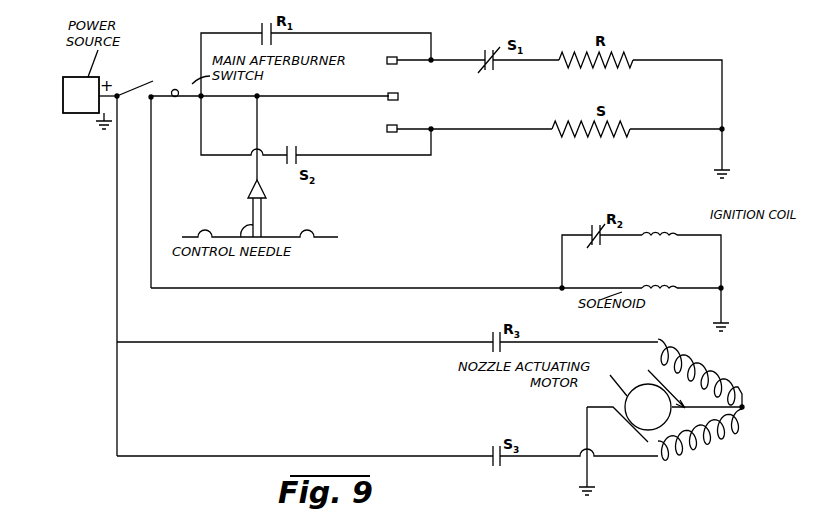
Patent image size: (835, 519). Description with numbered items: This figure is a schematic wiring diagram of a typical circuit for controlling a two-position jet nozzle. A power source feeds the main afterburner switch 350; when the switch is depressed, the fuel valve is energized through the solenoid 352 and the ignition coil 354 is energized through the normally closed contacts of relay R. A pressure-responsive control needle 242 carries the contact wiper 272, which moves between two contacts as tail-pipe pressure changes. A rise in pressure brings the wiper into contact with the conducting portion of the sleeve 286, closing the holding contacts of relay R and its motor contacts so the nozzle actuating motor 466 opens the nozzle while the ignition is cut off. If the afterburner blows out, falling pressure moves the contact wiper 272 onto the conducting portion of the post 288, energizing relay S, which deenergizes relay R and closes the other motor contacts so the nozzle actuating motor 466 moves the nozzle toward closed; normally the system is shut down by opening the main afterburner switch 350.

The main afterburner switch 350 is at (150, 85).
The sleeve 286 is at (388, 64).
The contact wiper 272 is at (398, 97).
The post 288 is at (387, 127).
The control needle 242 is at (261, 218).
The ignition coil 354 is at (688, 222).
The solenoid 352 is at (672, 283).
The nozzle actuating motor 466 is at (655, 418).